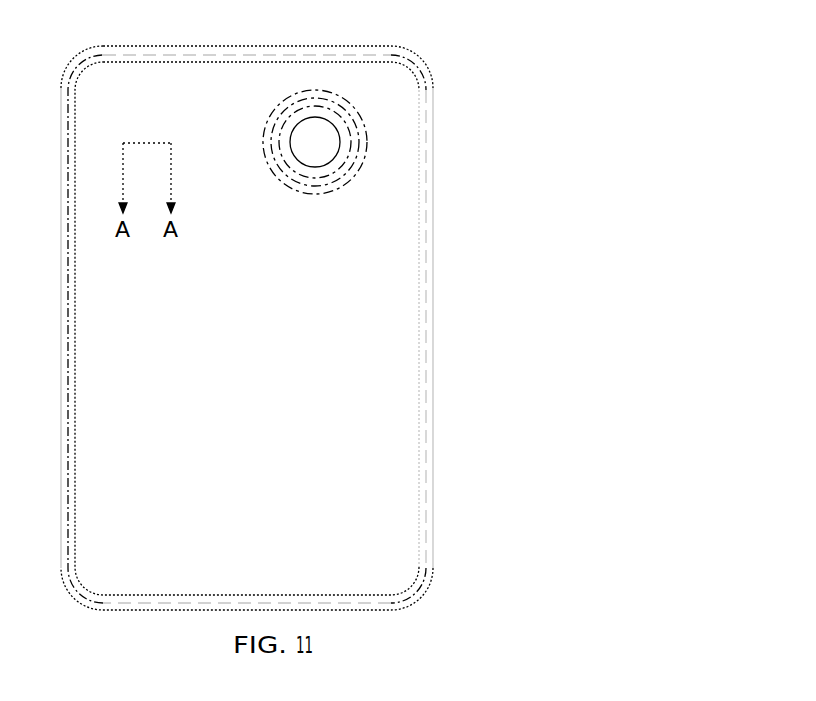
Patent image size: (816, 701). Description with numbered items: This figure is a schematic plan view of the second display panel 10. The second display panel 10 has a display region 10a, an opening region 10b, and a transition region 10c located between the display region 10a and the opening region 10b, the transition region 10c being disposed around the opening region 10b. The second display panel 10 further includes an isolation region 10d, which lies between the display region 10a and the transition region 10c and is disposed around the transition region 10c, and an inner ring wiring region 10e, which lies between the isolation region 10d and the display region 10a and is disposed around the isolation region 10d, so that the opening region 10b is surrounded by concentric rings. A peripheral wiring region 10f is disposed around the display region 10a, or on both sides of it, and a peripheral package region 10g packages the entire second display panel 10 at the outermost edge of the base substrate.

The second display panel 10 is at (68, 30).
The display region 10a is at (400, 400).
The opening region 10b is at (312, 133).
The transition region 10c is at (278, 138).
The isolation region 10d is at (357, 126).
The inner ring wiring region 10e is at (345, 98).
The peripheral wiring region 10f is at (421, 313).
The peripheral package region 10g is at (431, 263).